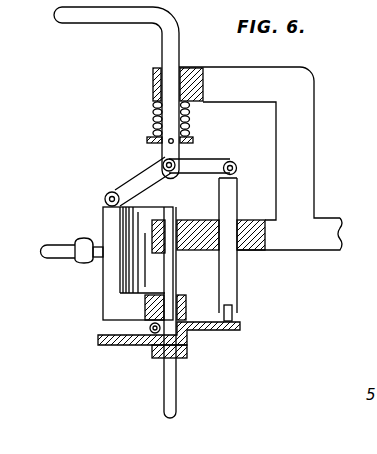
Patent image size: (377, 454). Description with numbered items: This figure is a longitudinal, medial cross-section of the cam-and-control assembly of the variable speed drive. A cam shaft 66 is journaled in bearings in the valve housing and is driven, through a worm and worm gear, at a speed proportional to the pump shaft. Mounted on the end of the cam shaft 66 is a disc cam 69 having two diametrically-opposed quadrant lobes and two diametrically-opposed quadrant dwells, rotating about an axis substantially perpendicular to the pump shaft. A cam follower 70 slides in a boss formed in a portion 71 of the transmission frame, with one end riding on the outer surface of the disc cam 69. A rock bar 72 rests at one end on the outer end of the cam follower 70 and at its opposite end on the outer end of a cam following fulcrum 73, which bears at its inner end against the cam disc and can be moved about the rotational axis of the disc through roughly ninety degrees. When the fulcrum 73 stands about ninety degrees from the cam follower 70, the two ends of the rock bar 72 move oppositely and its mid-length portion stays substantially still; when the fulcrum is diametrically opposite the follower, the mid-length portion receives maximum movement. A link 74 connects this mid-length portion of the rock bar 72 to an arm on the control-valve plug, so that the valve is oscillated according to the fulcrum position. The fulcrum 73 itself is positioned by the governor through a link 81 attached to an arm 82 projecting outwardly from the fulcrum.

The cam shaft 66 is at (167, 387).
The disc cam 69 is at (98, 340).
The cam follower 70 is at (223, 272).
The portion of the transmission frame 71 is at (255, 220).
The rock bar 72 is at (139, 174).
The cam following fulcrum 73 is at (108, 295).
The link 74 is at (163, 42).
The link 81 is at (58, 245).
The arm 82 is at (98, 243).